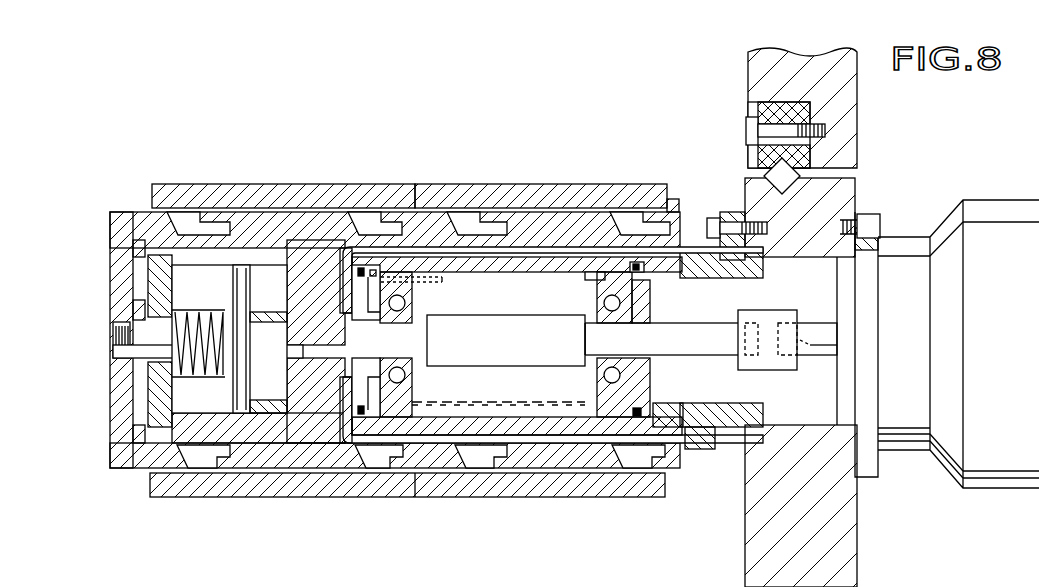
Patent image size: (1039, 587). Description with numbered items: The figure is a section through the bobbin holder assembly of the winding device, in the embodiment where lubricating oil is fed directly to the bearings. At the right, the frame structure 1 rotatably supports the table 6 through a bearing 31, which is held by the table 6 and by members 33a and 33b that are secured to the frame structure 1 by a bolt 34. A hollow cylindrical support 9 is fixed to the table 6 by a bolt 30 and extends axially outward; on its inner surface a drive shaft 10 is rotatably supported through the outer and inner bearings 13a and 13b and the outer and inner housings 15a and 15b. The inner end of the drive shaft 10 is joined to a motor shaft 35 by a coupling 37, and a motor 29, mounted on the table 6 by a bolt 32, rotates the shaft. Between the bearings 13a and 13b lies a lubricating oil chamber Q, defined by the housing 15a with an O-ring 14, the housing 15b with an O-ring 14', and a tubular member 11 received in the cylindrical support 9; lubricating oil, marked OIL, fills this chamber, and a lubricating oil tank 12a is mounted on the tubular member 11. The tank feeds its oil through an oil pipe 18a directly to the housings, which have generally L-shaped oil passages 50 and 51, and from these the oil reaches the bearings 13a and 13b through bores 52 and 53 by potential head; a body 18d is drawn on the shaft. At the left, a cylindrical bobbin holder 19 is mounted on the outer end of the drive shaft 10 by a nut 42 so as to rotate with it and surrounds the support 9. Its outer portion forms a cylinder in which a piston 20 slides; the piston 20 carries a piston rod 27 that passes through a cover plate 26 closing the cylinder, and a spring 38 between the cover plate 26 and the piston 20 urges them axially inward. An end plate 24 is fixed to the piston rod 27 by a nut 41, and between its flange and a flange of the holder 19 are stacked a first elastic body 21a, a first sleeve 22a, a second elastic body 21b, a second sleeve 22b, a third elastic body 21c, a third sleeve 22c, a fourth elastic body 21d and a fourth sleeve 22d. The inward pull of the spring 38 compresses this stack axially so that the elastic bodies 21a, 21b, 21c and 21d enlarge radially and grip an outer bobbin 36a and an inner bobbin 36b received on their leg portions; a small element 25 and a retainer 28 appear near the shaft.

The frame structure 1 is at (745, 80).
The table 6 is at (758, 487).
The hollow cylindrical support 9 is at (706, 424).
The drive shaft 10 is at (318, 348).
The tubular member 11 is at (543, 282).
The lubricating oil tank 12a is at (518, 248).
The outer bearing 13a is at (345, 300).
The inner bearing 13b is at (650, 296).
The O-ring 14 is at (535, 343).
The O-ring 14' is at (715, 245).
The outer housing 15a is at (410, 392).
The inner housing 15b is at (640, 396).
The oil pipe 18a is at (438, 284).
The rotor body 18d is at (510, 340).
The cylindrical bobbin holder 19 is at (312, 485).
The piston 20 is at (204, 308).
The first elastic body 21a is at (180, 213).
The second elastic body 21b is at (358, 213).
The third elastic body 21c is at (453, 213).
The fourth elastic body 21d is at (617, 213).
The first sleeve 22a is at (275, 212).
The second sleeve 22b is at (422, 210).
The third sleeve 22c is at (535, 212).
The fourth sleeve 22d is at (676, 205).
The end plate 24 is at (130, 466).
The seal 25 is at (143, 330).
The cover plate 26 is at (162, 392).
The piston rod 27 is at (208, 372).
The retainer 28 is at (255, 410).
The motor 29 is at (978, 202).
The bolt 30 is at (716, 218).
The bearing 31 is at (792, 186).
The bolt 32 is at (884, 214).
The member 33a is at (758, 158).
The member 33b is at (815, 92).
The bolt 34 is at (746, 130).
The motor shaft 35 is at (822, 356).
The outer bobbin 36a is at (330, 196).
The inner bobbin 36b is at (487, 196).
The coupling 37 is at (752, 310).
The spring 38 is at (160, 308).
The nut 41 is at (113, 350).
The nut 42 is at (248, 310).
The oil passage 50 is at (355, 287).
The oil passage 51 is at (645, 268).
The bore 52 is at (378, 316).
The bore 53 is at (640, 322).
The lubricating oil chamber Q is at (477, 366).
The oil OIL is at (512, 400).